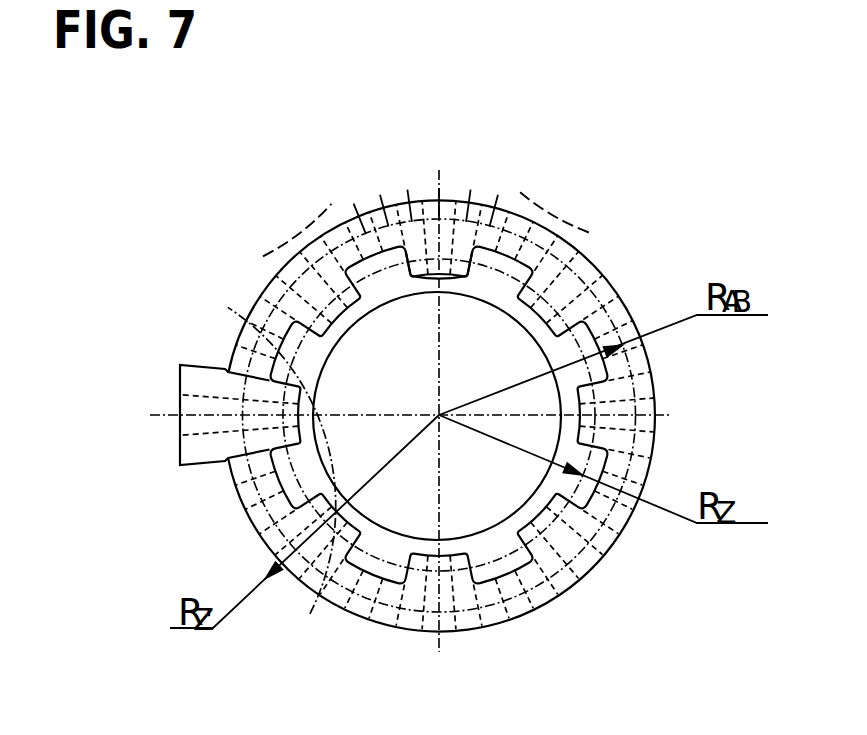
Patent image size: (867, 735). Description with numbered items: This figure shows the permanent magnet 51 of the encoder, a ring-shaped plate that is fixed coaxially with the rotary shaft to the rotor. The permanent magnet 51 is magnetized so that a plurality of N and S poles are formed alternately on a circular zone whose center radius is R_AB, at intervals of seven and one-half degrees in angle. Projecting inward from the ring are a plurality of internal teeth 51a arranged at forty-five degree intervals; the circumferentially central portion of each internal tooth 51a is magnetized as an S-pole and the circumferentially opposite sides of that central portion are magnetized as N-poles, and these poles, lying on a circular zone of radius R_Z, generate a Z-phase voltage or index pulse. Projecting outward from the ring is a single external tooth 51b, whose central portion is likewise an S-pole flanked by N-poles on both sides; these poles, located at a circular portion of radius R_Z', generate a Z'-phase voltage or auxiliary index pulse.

The permanent magnet 51 is at (610, 249).
The internal tooth 51a is at (453, 277).
The external tooth 51b is at (190, 363).